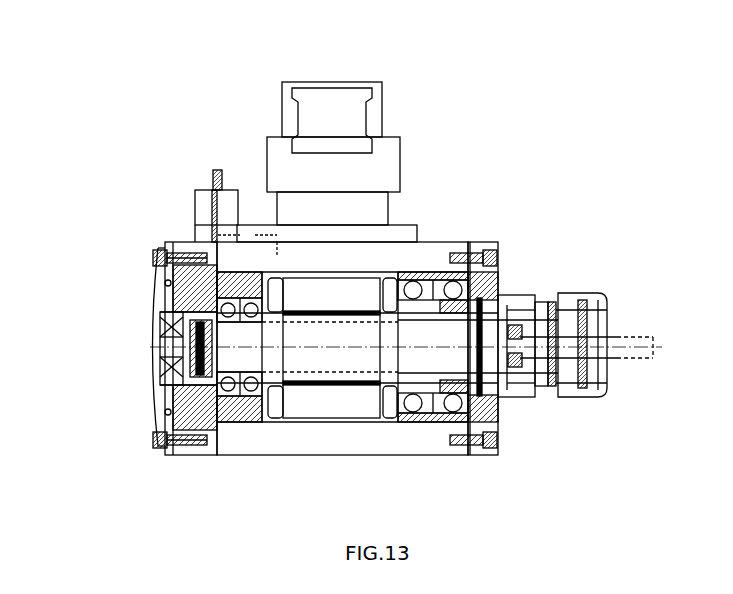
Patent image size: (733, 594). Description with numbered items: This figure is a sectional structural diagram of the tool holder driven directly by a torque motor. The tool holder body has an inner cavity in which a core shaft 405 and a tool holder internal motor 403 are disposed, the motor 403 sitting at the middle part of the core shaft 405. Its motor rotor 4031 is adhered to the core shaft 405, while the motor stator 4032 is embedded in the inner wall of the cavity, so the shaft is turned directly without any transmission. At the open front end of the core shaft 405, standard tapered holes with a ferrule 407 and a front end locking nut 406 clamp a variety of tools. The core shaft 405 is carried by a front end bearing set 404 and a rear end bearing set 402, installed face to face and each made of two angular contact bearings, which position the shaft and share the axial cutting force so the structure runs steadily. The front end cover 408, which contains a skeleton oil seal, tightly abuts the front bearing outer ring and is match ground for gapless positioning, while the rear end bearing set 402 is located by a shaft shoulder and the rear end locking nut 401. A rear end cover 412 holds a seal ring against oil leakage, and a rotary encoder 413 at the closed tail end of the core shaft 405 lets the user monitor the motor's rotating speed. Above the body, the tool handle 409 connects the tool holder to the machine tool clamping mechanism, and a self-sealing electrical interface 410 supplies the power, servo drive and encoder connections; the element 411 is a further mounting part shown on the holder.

The rear end locking nut 401 is at (192, 447).
The rear end bearing set 402 is at (308, 483).
The tool holder internal motor 403 is at (322, 378).
The tool holder internal motor rotor 4031 is at (340, 387).
The tool holder internal motor stator 4032 is at (380, 278).
The front end bearing set 404 is at (518, 483).
The core shaft 405 is at (510, 393).
The front end locking nut 406 is at (590, 400).
The ferrule 407 is at (571, 293).
The front end cover 408 is at (482, 248).
The tool handle 409 is at (375, 145).
The self-sealing electrical interface 410 is at (218, 208).
The mounting bolt 411 is at (220, 170).
The rear end cover 412 is at (177, 242).
The rotary encoder 413 is at (150, 255).